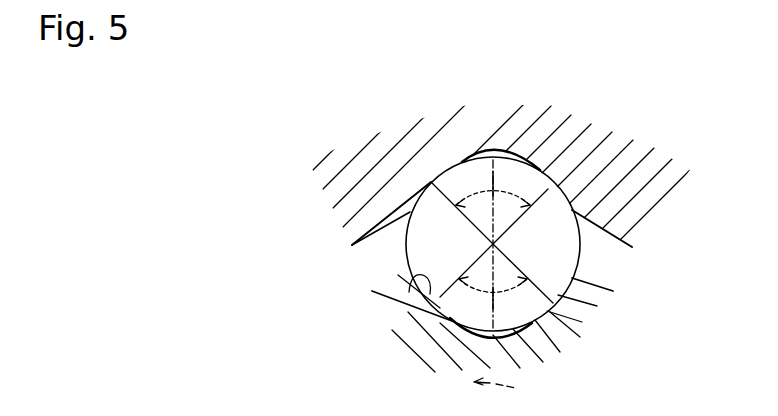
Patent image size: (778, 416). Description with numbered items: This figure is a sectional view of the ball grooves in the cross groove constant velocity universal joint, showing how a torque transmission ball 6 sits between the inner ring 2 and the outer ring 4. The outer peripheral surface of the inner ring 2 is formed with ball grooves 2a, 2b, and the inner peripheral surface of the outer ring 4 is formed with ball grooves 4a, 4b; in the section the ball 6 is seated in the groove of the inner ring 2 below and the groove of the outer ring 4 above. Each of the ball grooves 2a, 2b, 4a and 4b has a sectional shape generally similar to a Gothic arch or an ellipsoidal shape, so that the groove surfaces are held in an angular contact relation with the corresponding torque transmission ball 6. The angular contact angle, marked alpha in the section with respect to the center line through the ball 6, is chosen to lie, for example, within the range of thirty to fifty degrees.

The inner ring 2 is at (550, 328).
The ball groove 2a is at (422, 309).
The ball groove 2b is at (412, 311).
The outer ring 4 is at (645, 193).
The ball groove 4a is at (517, 118).
The ball groove 4b is at (517, 118).
The torque transmission ball 6 is at (553, 250).